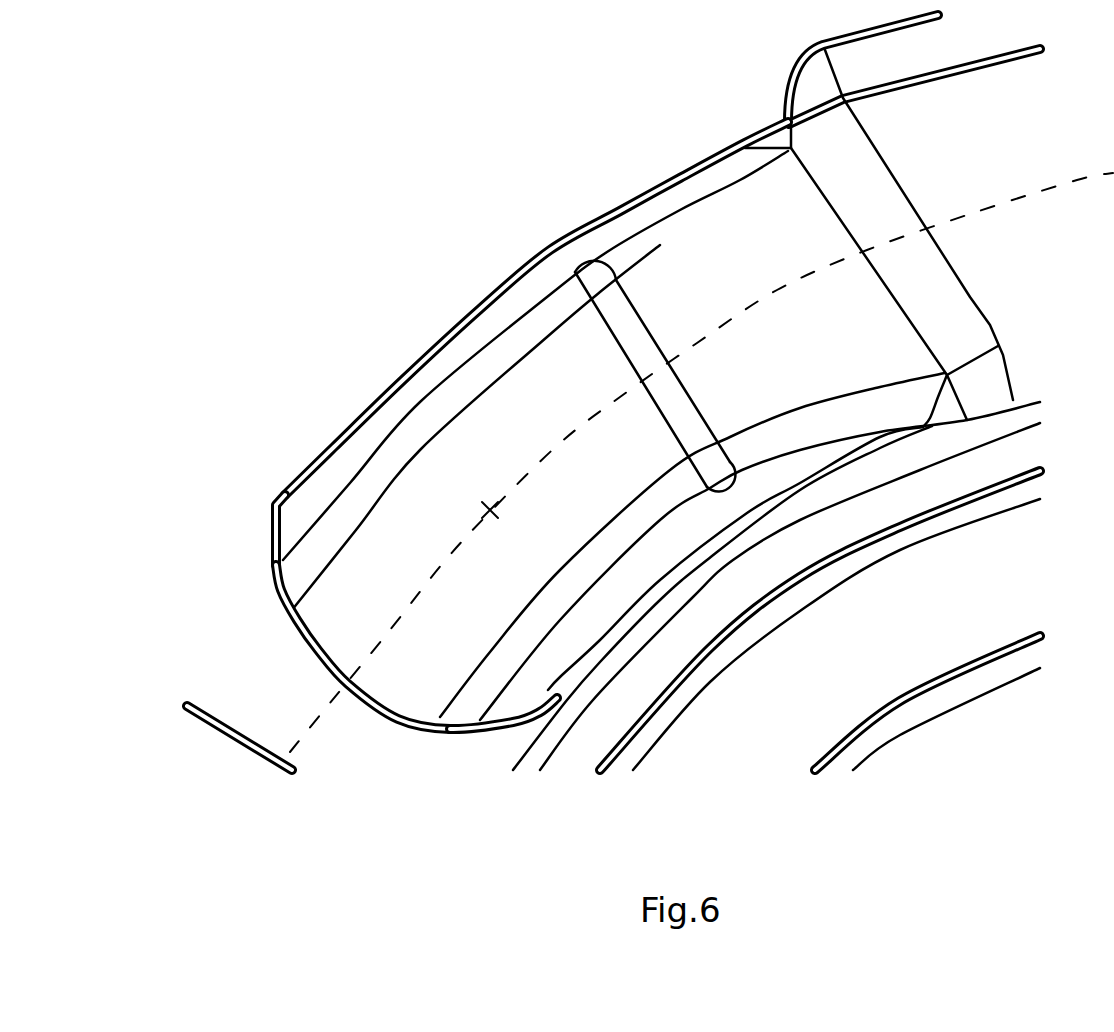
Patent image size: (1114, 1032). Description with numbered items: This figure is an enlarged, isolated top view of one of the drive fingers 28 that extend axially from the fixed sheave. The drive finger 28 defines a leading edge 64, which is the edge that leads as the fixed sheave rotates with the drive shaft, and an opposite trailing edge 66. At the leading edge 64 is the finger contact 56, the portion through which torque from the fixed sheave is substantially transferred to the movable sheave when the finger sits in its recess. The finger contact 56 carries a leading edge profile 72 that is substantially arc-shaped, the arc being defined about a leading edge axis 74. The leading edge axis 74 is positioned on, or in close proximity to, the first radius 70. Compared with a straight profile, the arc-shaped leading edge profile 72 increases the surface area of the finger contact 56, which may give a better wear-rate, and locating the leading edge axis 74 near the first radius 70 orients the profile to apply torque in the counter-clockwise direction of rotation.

The drive finger 28 is at (438, 353).
The leading edge 64 is at (252, 567).
The finger contact 56 is at (300, 641).
The leading edge profile 72 is at (388, 720).
The first radius 70 is at (740, 305).
The trailing edge 66 is at (813, 223).
The leading edge axis 74 is at (701, 462).